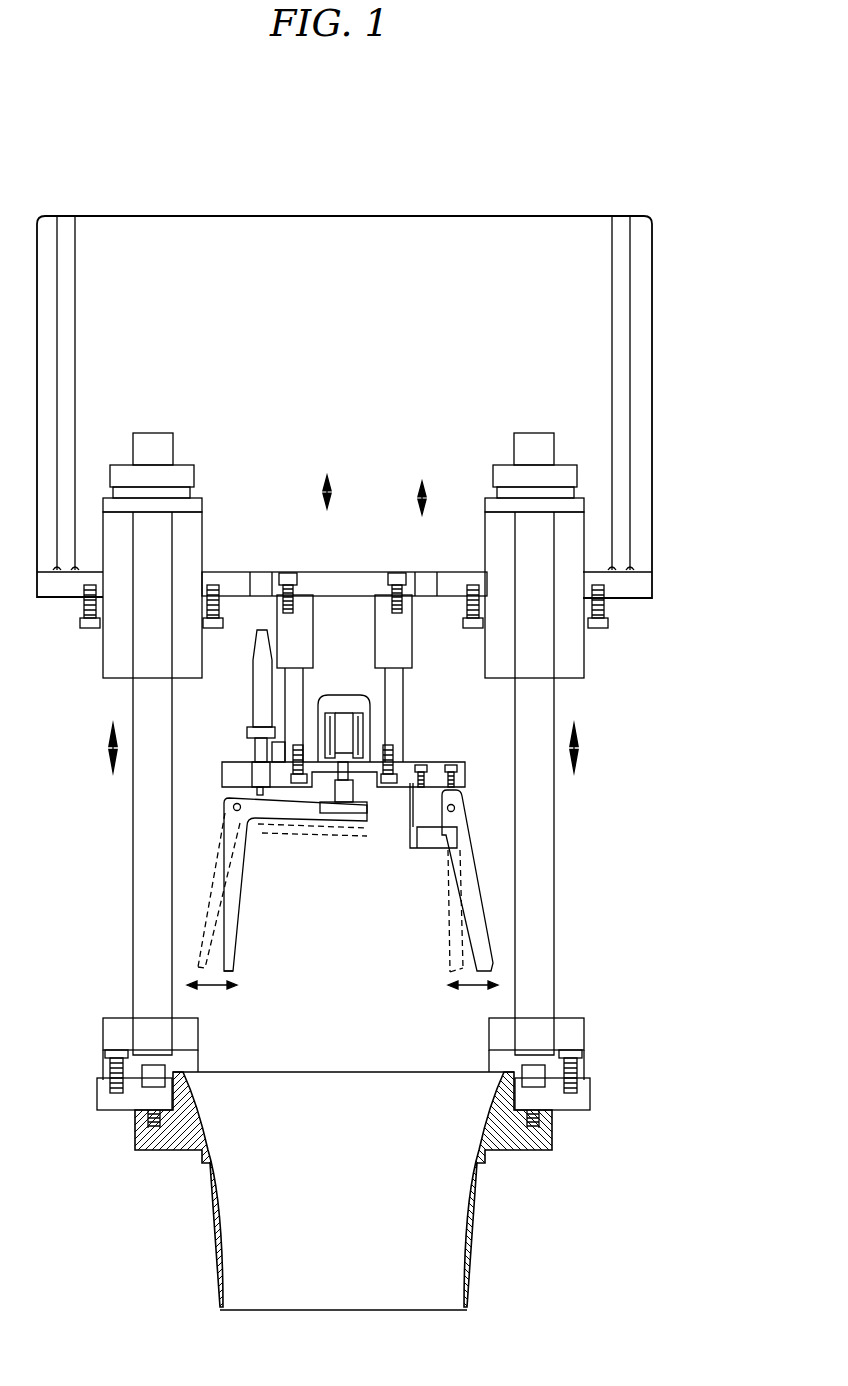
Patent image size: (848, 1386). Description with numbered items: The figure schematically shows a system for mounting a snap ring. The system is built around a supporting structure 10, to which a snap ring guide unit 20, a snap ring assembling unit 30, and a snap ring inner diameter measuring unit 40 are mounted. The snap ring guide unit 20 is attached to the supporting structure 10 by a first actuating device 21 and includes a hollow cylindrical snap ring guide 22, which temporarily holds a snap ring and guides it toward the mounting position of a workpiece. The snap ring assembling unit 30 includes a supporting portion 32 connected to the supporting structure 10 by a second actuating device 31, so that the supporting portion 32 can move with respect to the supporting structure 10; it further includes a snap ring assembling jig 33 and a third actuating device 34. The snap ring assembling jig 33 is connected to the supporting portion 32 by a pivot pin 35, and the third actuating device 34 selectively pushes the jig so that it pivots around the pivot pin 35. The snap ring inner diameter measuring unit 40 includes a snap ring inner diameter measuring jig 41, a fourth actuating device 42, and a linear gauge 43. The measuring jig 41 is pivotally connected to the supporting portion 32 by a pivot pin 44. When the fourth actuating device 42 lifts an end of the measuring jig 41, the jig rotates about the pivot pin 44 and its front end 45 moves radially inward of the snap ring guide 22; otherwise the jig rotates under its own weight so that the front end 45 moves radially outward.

The supporting structure 10 is at (652, 458).
The snap ring guide unit 20 is at (141, 1170).
The first actuating device 21 is at (133, 853).
The snap ring guide 22 is at (477, 1200).
The snap ring assembling unit 30 is at (430, 872).
The second actuating device 31 is at (304, 685).
The supporting portion 32 is at (438, 762).
The snap ring assembling jig 33 is at (481, 903).
The third actuating device 34 is at (423, 848).
The pivot pin 35 is at (455, 808).
The snap ring inner diameter measuring unit 40 is at (268, 856).
The snap ring inner diameter measuring jig 41 is at (232, 875).
The fourth actuating device 42 is at (353, 825).
The linear gauge 43 is at (253, 703).
The pivot pin 44 is at (233, 807).
The front end 45 is at (233, 970).